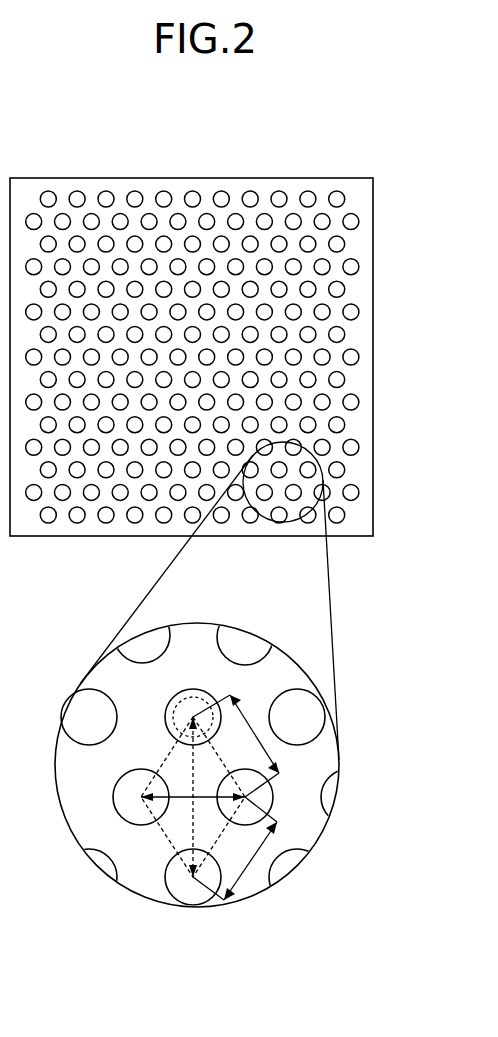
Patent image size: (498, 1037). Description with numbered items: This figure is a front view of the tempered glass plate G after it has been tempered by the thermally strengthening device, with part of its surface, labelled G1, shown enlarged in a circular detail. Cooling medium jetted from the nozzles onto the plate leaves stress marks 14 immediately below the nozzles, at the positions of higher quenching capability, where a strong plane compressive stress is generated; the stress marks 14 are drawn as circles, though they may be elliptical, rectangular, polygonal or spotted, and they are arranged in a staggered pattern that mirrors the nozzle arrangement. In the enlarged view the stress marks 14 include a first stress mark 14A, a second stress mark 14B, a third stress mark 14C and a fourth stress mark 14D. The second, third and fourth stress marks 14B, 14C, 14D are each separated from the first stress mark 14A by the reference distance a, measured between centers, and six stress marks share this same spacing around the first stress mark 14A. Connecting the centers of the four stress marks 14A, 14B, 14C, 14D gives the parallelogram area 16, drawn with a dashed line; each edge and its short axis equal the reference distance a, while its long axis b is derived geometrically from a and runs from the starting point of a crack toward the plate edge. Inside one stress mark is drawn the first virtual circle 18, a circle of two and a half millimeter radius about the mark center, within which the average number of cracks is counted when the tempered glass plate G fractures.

The tempered glass plate G is at (288, 160).
The plate surface with hole region G1 is at (121, 188).
The stress marks 14 is at (359, 447).
The first stress mark 14A is at (273, 797).
The second stress mark 14B is at (174, 698).
The third stress mark 14C is at (113, 785).
The fourth stress mark 14D is at (152, 900).
The parallelogram area 16 is at (166, 840).
The first virtual circle 18 is at (151, 655).
The reference distance a is at (210, 793).
The long axis b is at (193, 826).